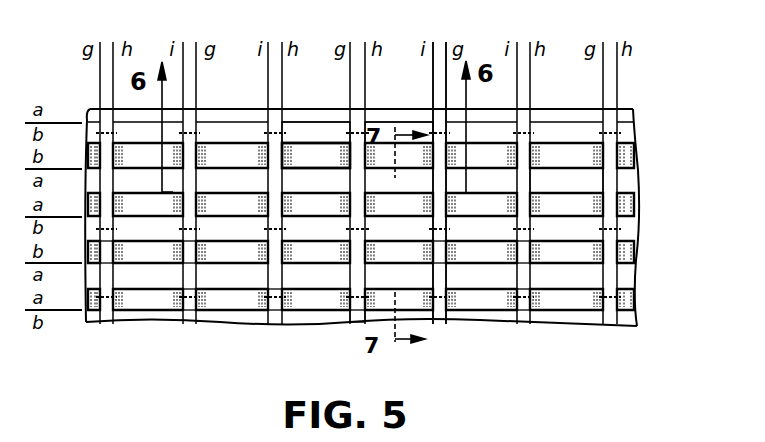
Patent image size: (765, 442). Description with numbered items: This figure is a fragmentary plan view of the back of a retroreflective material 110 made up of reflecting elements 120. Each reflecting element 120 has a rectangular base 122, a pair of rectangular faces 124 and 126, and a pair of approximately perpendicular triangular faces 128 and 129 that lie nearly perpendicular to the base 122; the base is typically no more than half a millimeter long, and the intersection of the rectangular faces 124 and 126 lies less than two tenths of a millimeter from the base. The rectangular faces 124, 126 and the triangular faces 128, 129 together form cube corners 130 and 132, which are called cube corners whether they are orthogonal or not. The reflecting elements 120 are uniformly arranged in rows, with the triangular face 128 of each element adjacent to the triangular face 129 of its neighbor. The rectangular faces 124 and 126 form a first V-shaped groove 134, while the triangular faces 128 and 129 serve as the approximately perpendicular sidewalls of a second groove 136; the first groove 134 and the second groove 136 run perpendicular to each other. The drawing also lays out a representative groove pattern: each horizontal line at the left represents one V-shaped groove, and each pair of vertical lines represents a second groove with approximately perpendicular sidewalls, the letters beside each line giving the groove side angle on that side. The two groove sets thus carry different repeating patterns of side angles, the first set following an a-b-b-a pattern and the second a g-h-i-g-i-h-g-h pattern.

The retroreflective material 110 is at (233, 95).
The reflecting element 120 is at (293, 130).
The rectangular base 122 is at (437, 127).
The rectangular face 124 is at (407, 127).
The rectangular face 126 is at (322, 153).
The triangular face 128 is at (195, 305).
The triangular face 129 is at (270, 305).
The cube corner 130 is at (533, 192).
The cube corner 132 is at (177, 243).
The first V-shaped groove 134 is at (623, 267).
The second groove 136 is at (358, 317).